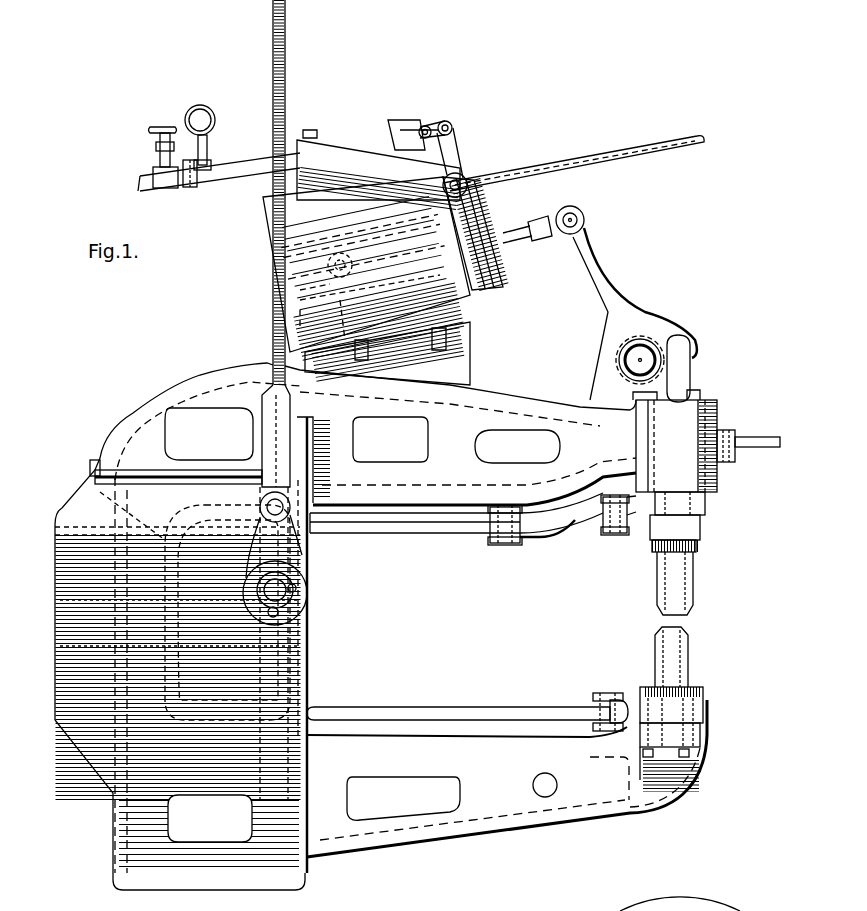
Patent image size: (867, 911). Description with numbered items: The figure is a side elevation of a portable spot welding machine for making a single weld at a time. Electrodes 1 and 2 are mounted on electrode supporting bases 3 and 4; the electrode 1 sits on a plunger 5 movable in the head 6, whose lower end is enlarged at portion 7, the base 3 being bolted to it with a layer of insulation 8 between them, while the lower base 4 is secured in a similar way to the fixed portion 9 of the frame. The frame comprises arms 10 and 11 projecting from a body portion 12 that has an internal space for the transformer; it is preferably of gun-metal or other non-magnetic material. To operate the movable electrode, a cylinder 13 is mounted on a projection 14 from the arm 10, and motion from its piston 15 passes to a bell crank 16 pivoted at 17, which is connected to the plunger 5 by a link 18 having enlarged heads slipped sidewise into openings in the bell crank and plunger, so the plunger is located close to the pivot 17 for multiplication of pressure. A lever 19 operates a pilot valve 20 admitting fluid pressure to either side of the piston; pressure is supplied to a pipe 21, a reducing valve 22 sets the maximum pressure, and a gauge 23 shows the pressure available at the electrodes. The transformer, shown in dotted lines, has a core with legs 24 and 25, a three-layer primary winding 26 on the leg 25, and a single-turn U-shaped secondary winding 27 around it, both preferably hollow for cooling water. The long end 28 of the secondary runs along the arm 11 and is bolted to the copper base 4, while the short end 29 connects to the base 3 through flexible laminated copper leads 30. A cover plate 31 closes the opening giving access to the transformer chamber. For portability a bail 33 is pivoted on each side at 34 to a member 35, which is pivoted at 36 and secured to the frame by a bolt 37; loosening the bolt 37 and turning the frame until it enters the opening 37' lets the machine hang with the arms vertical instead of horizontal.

The electrode 1 is at (694, 602).
The electrode 2 is at (690, 666).
The electrode supporting base 3 is at (705, 535).
The electrode supporting base 4 is at (706, 712).
The plunger 5 is at (712, 398).
The head 6 is at (722, 432).
The enlarged portion of the plunger 7 is at (712, 497).
The layer of insulation 8 is at (705, 513).
The fixed portion of the frame 9 is at (705, 745).
The arm 10 is at (505, 400).
The arm 11 is at (490, 818).
The body portion 12 is at (310, 664).
The cylinder 13 is at (440, 165).
The projection 14 is at (462, 362).
The piston 15 is at (278, 280).
The bell crank 16 is at (598, 252).
The pivot 17 is at (642, 358).
The link 18 is at (691, 380).
The lever 19 is at (675, 140).
The pilot valve 20 is at (385, 125).
The pipe 21 is at (150, 190).
The reducing valve 22 is at (185, 190).
The gauge 23 is at (207, 108).
The leg 24 is at (55, 563).
The leg 25 is at (110, 548).
The primary winding 26 is at (56, 602).
The secondary winding 27 is at (58, 647).
The long end of the secondary 28 is at (402, 712).
The short end of the secondary 29 is at (432, 530).
The flexible leads 30 is at (563, 545).
The cover plate 31 is at (95, 493).
The bail 33 is at (290, 20).
The pivot 34 is at (290, 514).
The member 35 is at (290, 560).
The pivot 36 is at (288, 598).
The bolt 37 is at (296, 601).
The opening 37' is at (321, 589).